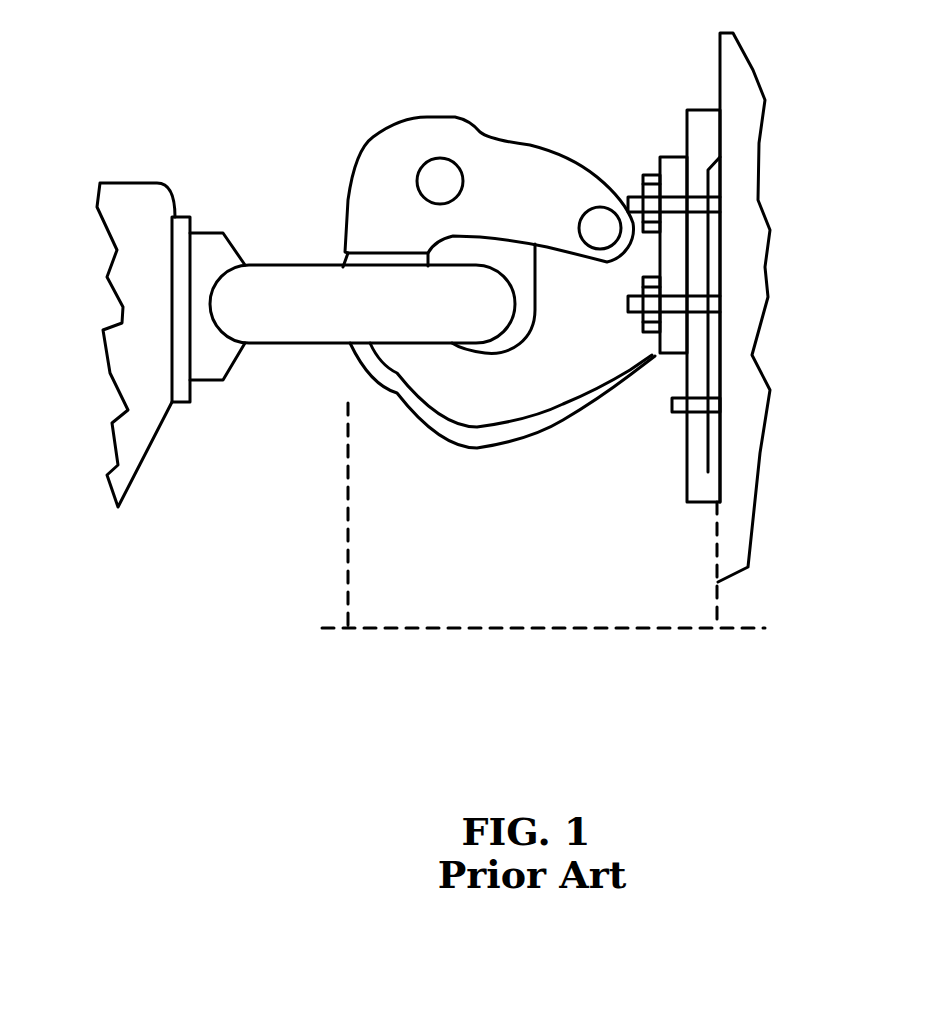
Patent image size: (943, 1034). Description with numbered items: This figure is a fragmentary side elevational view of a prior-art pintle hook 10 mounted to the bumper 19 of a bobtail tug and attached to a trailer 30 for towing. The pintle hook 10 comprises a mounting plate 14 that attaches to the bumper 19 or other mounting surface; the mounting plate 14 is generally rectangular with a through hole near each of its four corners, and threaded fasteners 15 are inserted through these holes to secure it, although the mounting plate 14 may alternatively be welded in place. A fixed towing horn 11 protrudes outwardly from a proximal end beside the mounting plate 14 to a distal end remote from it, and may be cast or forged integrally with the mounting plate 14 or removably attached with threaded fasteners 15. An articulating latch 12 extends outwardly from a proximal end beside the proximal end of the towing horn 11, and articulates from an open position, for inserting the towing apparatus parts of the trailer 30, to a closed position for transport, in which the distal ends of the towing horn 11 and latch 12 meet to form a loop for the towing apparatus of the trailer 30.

The pintle hook 10 is at (515, 628).
The towing horn 11 is at (538, 395).
The articulating latch 12 is at (510, 177).
The mounting plate 14 is at (702, 128).
The threaded fasteners 15 is at (657, 177).
The bumper 19 is at (750, 242).
The trailer 30 is at (137, 275).